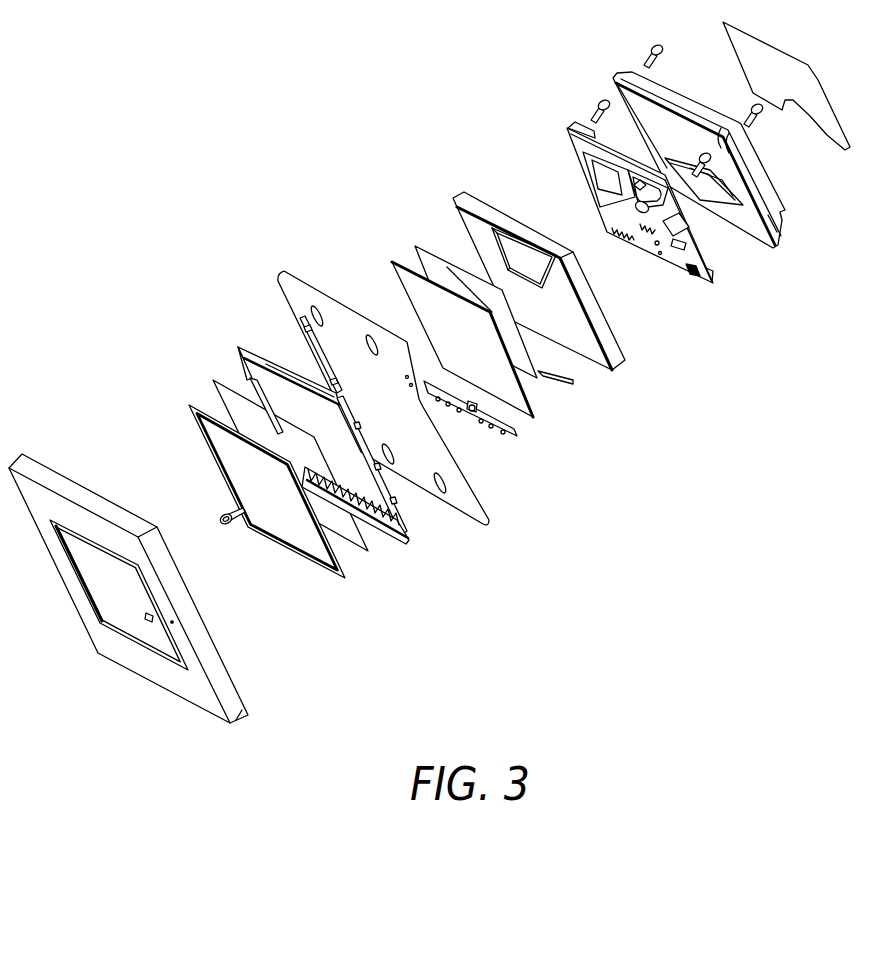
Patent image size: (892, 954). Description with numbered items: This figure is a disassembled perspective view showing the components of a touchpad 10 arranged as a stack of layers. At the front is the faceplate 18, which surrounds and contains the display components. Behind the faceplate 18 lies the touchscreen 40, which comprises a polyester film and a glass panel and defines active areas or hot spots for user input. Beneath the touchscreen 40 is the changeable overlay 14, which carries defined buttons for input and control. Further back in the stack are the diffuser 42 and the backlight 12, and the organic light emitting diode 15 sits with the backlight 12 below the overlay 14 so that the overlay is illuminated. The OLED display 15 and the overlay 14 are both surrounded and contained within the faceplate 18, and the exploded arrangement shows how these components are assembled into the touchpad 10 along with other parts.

The touchpad 10 is at (636, 570).
The backlight 12 is at (617, 353).
The overlay 14 is at (538, 415).
The organic light emitting diode (OLED) 15 is at (612, 185).
The faceplate 18 is at (245, 718).
The touchscreen 40 is at (348, 578).
The diffuser 42 is at (548, 388).